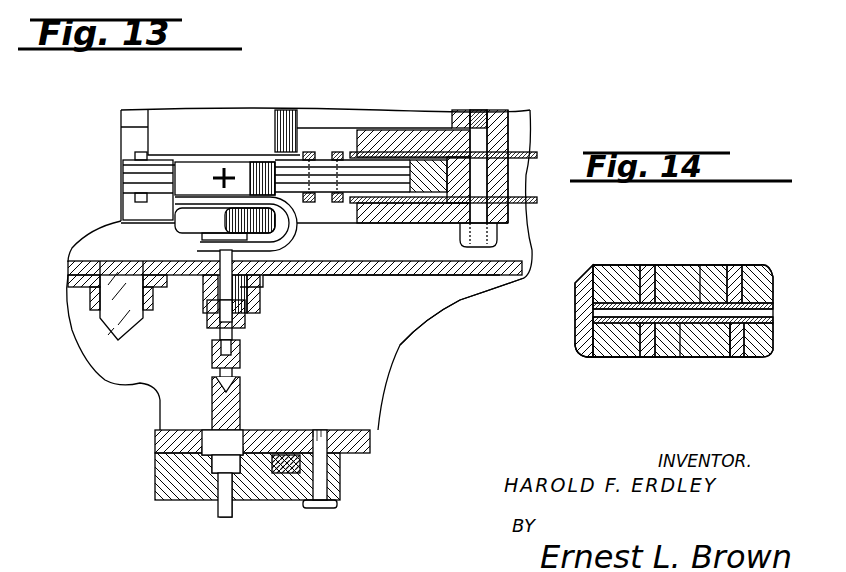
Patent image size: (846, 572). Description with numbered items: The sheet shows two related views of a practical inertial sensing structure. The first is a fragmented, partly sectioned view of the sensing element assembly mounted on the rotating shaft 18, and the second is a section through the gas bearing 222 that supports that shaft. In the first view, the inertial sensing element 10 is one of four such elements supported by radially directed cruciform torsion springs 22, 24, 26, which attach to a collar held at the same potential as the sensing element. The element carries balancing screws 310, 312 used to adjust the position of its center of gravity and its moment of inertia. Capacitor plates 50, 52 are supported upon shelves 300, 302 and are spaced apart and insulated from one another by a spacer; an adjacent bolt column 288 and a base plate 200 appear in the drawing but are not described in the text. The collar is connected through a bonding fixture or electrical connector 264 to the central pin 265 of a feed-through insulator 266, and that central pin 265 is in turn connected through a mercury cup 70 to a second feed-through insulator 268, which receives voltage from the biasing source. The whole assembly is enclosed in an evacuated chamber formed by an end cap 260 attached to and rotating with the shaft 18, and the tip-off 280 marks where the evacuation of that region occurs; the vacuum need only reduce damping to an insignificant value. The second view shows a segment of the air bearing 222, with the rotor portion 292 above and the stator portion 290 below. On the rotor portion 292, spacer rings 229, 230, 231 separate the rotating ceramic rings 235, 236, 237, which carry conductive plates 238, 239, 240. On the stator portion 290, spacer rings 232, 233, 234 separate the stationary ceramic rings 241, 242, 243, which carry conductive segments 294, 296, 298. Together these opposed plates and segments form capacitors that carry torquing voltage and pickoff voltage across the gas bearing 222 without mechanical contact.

In FIG. 13, the shaft 18 is at (178, 123).
In FIG. 13, the cruciform torsion spring 24 is at (229, 166).
In FIG. 13, the balancing screw 310 is at (311, 150).
In FIG. 13, the balancing screw 312 is at (340, 150).
In FIG. 13, the shelf 302 is at (412, 133).
In FIG. 13, the cruciform torsion spring 26 is at (122, 165).
In FIG. 13, the capacitor plate 50 is at (527, 155).
In FIG. 13, the bolt column 288 is at (505, 184).
In FIG. 13, the capacitor plate 52 is at (526, 200).
In FIG. 13, the cruciform torsion spring 22 is at (357, 187).
In FIG. 13, the inertial sensing element 10 is at (423, 195).
In FIG. 13, the central pin 265 is at (250, 291).
In FIG. 13, the electrical connector 264 is at (288, 252).
In FIG. 13, the shelf 300 is at (387, 223).
In FIG. 13, the feed-through insulator 266 is at (244, 328).
In FIG. 13, the end cap 260 is at (507, 284).
In FIG. 13, the tip-off 280 is at (121, 330).
In FIG. 13, the mercury cup 70 is at (240, 400).
In FIG. 13, the feed-through insulator 268 is at (242, 448).
In FIG. 13, the base plate 200 is at (349, 453).
In FIG. 14, the gas bearing 222 is at (572, 308).
In FIG. 14, the spacer ring 229 is at (580, 290).
In FIG. 14, the rotor portion 292 is at (593, 268).
In FIG. 14, the rotating ceramic ring 235 is at (608, 278).
In FIG. 14, the conductive plate 238 is at (645, 285).
In FIG. 14, the spacer ring 230 is at (668, 278).
In FIG. 14, the rotating ceramic ring 236 is at (725, 278).
In FIG. 14, the conductive plate 239 is at (735, 285).
In FIG. 14, the spacer ring 231 is at (758, 270).
In FIG. 14, the rotating ceramic ring 237 is at (778, 292).
In FIG. 14, the conductive plate 240 is at (773, 313).
In FIG. 14, the conductive segment 298 is at (773, 322).
In FIG. 14, the stationary ceramic ring 241 is at (606, 347).
In FIG. 14, the conductive segment 294 is at (645, 345).
In FIG. 14, the spacer ring 233 is at (665, 345).
In FIG. 14, the conductive segment 296 is at (722, 345).
In FIG. 14, the stationary ceramic ring 242 is at (737, 348).
In FIG. 14, the stationary ceramic ring 243 is at (768, 350).
In FIG. 14, the spacer ring 234 is at (770, 362).
In FIG. 14, the spacer ring 232 is at (586, 350).
In FIG. 14, the stator portion 290 is at (588, 357).